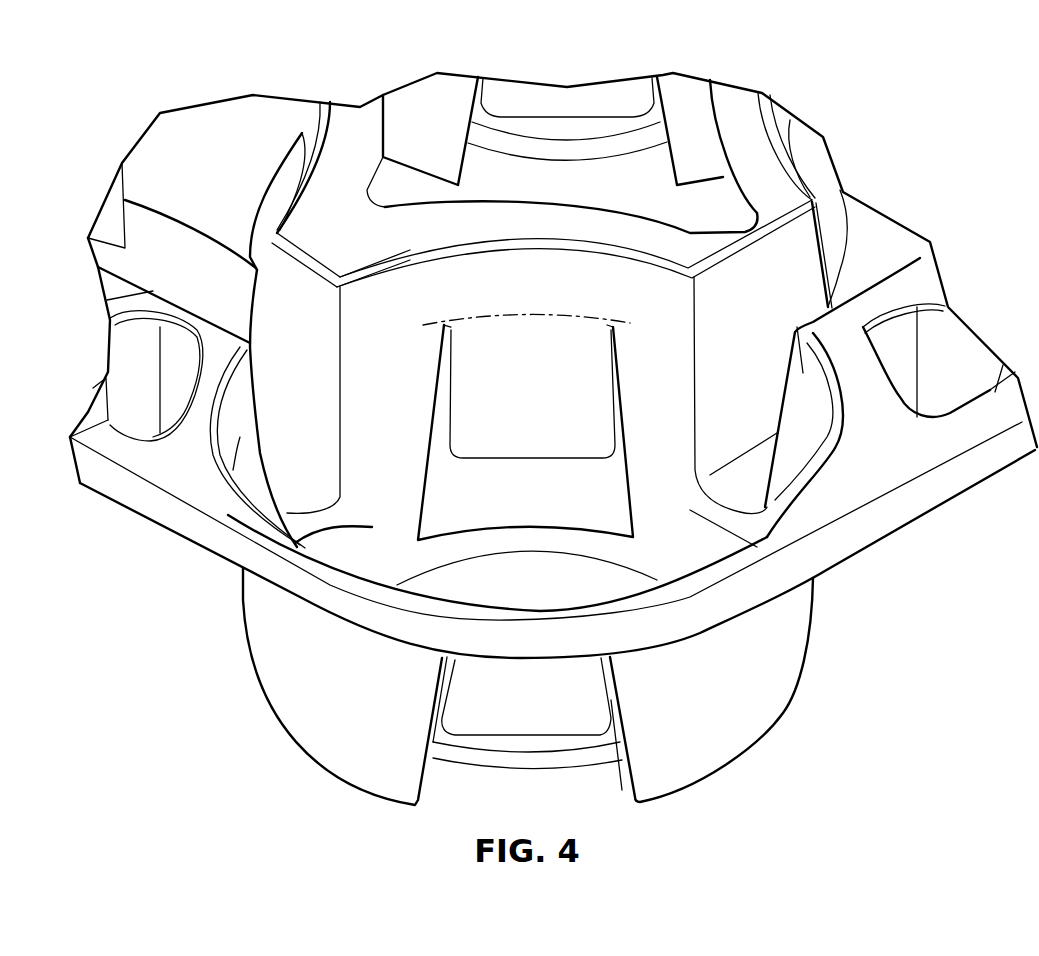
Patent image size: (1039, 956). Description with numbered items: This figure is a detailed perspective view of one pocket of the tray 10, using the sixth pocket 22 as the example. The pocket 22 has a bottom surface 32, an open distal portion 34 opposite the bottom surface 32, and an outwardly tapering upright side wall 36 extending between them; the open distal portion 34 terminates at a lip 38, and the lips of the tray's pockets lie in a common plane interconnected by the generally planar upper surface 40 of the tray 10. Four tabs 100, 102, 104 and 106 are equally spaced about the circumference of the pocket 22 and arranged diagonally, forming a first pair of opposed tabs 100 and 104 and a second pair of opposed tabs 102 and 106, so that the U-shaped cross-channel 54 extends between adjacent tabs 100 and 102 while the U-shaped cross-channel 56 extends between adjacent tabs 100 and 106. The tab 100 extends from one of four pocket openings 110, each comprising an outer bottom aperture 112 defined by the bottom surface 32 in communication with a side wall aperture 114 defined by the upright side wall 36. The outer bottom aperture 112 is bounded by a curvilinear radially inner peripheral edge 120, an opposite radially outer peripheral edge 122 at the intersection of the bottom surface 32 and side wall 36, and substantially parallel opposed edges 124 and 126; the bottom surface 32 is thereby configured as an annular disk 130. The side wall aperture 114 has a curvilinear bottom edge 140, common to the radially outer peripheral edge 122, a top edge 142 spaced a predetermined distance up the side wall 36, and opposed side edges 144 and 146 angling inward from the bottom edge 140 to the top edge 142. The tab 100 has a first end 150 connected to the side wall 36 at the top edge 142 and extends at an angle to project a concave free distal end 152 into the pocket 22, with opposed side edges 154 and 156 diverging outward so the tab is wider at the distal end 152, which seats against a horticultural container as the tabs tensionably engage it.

The tray 10 is at (138, 146).
The sixth pocket 22 is at (243, 495).
The bottom surface 32 is at (783, 717).
The open distal portion 34 is at (833, 477).
The upright side wall 36 is at (867, 290).
The lip 38 is at (810, 510).
The upper surface 40 is at (170, 465).
The U-shaped cross-channel 54 is at (741, 307).
The U-shaped cross-channel 56 is at (282, 332).
The tab 100 is at (516, 404).
The tab 102 is at (820, 453).
The tab 104 is at (516, 714).
The tab 106 is at (245, 497).
The pocket opening 110 is at (520, 494).
The outer bottom aperture 112 is at (613, 530).
The side wall aperture 114 is at (619, 441).
The radially inner peripheral edge 120 is at (580, 532).
The radially outer peripheral edge 122 is at (438, 487).
The opposed edge 124 is at (378, 527).
The opposed edge 126 is at (645, 518).
The annular disk 130 is at (610, 753).
The bottom edge 140 is at (425, 445).
The top edge 142 is at (527, 313).
The side edge 144 is at (440, 343).
The side edge 146 is at (623, 360).
The first end 150 is at (467, 320).
The free distal end 152 is at (543, 453).
The side edge 154 is at (447, 403).
The side edge 156 is at (607, 377).